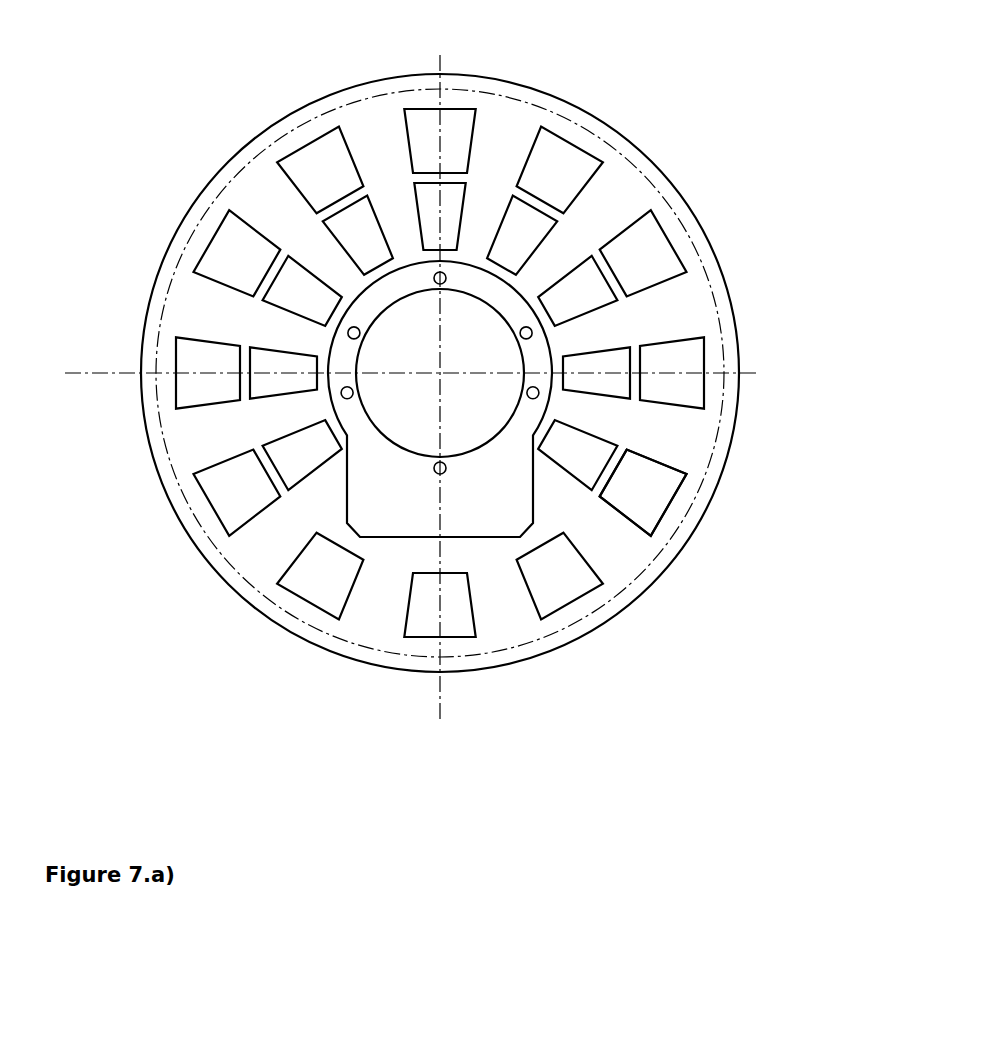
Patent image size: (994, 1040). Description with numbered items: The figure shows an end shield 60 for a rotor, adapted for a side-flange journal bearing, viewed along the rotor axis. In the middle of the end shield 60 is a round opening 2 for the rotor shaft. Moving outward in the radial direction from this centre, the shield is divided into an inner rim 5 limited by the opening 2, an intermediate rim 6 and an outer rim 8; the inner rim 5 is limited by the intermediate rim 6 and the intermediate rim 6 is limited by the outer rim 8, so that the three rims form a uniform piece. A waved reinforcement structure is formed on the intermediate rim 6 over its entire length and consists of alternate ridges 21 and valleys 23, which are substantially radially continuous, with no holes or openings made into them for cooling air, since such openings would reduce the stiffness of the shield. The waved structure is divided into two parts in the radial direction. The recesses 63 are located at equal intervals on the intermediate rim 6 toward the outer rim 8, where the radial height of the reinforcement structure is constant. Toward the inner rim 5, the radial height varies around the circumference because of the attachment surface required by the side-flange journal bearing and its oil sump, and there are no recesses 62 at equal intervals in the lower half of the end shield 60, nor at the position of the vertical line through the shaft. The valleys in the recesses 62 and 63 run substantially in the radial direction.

The end shield 60 is at (567, 66).
The intermediate rim 6 is at (650, 315).
The outer rim 8 is at (600, 153).
The recesses 62 is at (608, 382).
The recesses 63 is at (653, 500).
The ridges 21 is at (637, 448).
The valleys 23 is at (619, 498).
The inner rim 5 is at (327, 338).
The opening 2 is at (417, 357).